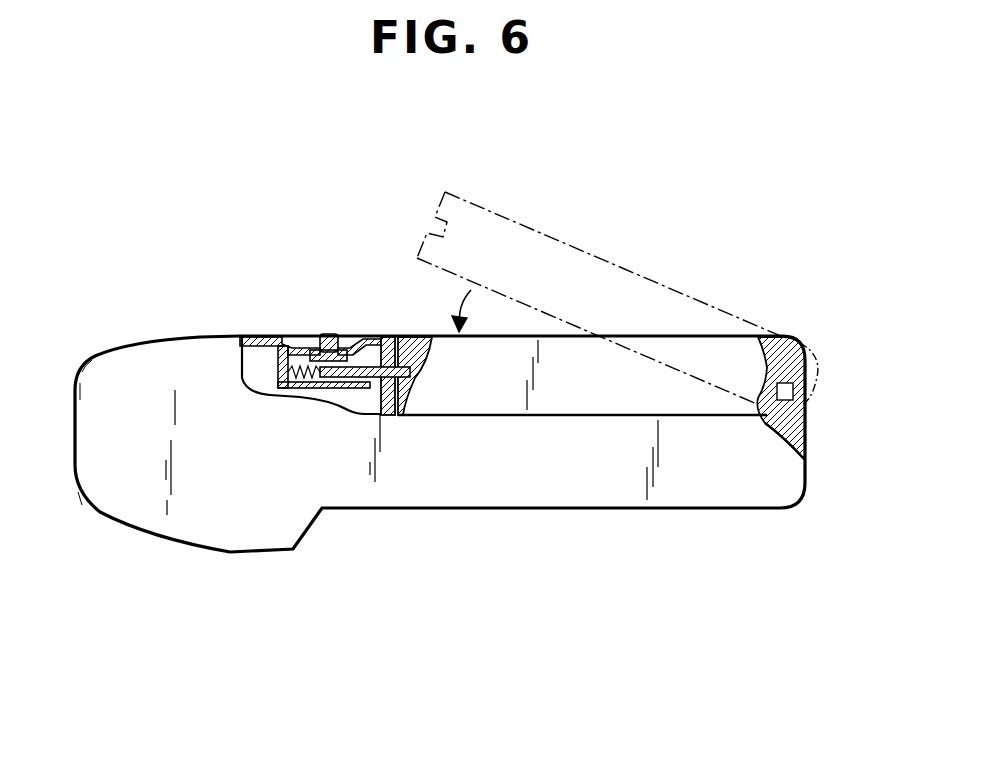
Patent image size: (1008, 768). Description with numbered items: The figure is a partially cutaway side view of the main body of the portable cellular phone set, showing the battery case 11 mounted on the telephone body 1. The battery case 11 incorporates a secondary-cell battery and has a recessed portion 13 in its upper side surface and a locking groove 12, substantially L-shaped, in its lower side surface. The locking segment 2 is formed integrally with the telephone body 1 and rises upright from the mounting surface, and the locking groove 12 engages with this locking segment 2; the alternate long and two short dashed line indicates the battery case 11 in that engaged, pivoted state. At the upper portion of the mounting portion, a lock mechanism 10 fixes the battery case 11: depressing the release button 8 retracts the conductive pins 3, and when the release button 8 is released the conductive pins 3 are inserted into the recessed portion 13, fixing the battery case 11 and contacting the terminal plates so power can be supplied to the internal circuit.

The telephone body 1 is at (167, 363).
The locking segment 2 is at (806, 387).
The conductive pins 3 is at (398, 336).
The release button 8 is at (330, 333).
The lock mechanism 10 is at (287, 323).
The battery case 11 is at (580, 247).
The locking groove 12 is at (777, 377).
The recessed portion 13 is at (403, 416).